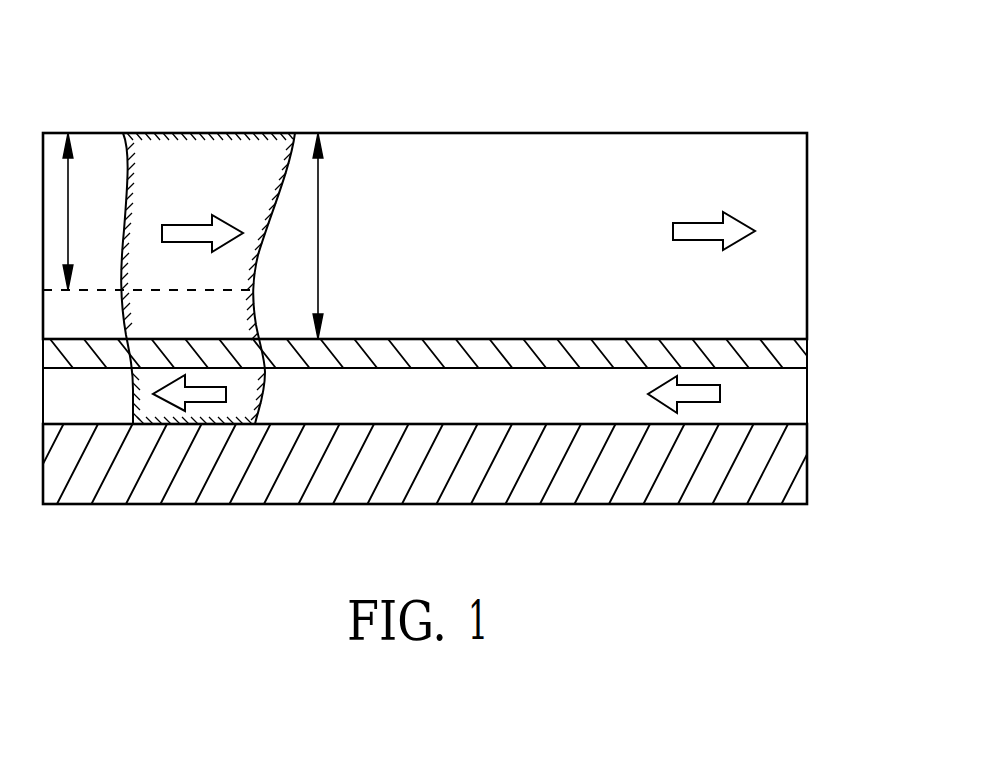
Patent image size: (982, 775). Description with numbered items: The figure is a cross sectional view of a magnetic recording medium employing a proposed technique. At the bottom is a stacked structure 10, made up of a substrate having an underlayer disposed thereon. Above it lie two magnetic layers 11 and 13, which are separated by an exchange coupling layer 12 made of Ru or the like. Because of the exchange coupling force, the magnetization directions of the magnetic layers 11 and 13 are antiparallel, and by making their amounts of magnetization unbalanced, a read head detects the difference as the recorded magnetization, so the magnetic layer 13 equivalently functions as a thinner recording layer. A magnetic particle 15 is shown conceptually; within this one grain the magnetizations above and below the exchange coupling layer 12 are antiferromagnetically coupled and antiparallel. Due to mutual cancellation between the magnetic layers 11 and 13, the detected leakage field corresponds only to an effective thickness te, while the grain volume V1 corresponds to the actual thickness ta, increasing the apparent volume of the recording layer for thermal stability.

The stacked structure 10 is at (807, 454).
The magnetic layer 11 is at (807, 395).
The exchange coupling layer 12 is at (807, 349).
The magnetic layer 13 is at (807, 175).
The magnetic particle 15 is at (168, 130).
The volume of the magnetic grain V1 is at (242, 174).
The effective thickness te is at (68, 190).
The actual thickness ta is at (331, 236).